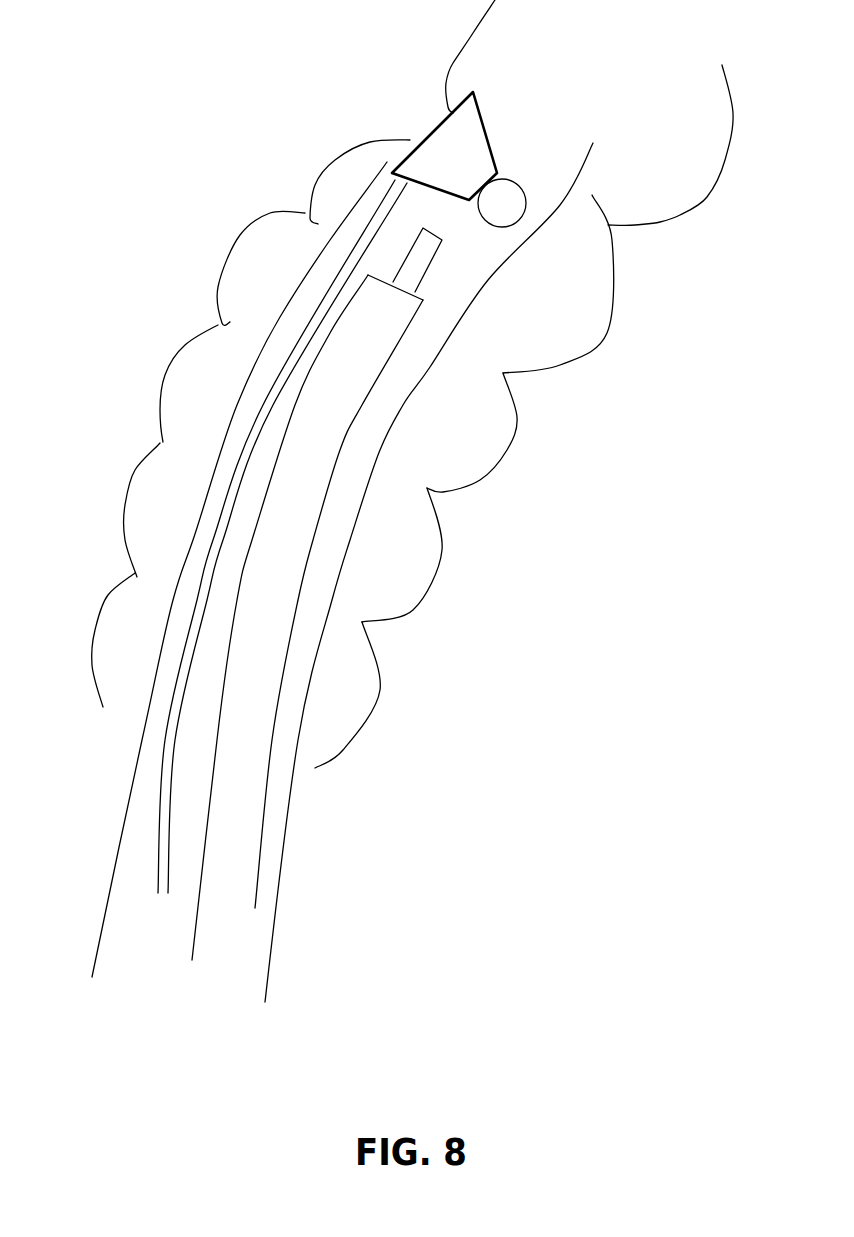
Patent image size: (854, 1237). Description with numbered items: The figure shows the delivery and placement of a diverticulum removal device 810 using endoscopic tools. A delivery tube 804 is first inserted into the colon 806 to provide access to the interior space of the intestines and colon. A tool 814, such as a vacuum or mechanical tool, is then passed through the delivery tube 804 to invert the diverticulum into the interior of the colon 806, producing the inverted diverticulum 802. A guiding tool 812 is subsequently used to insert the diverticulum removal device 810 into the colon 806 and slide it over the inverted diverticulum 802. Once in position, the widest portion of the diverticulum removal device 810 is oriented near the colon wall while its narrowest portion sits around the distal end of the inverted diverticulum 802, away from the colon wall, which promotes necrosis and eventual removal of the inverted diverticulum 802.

The inverted diverticulum 802 is at (508, 175).
The delivery tube 804 is at (116, 819).
The colon 806 is at (117, 479).
The diverticulum removal device 810 is at (438, 123).
The guiding tool 812 is at (157, 870).
The tool 814 is at (262, 848).